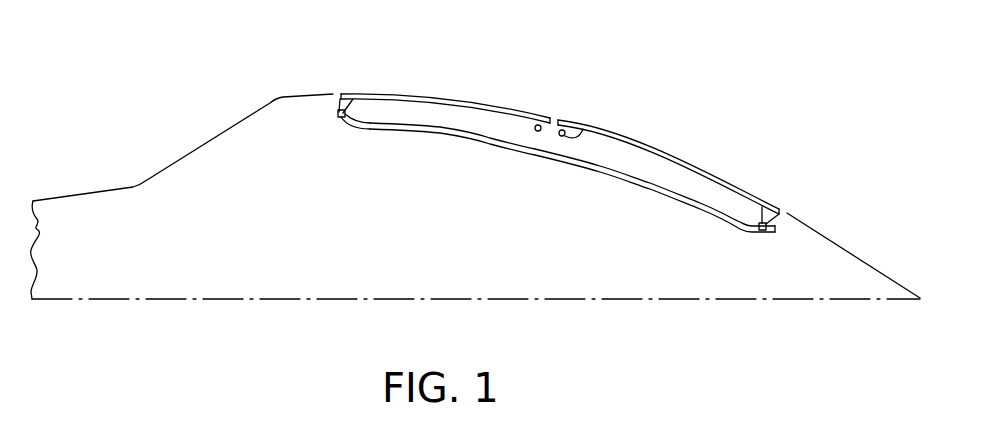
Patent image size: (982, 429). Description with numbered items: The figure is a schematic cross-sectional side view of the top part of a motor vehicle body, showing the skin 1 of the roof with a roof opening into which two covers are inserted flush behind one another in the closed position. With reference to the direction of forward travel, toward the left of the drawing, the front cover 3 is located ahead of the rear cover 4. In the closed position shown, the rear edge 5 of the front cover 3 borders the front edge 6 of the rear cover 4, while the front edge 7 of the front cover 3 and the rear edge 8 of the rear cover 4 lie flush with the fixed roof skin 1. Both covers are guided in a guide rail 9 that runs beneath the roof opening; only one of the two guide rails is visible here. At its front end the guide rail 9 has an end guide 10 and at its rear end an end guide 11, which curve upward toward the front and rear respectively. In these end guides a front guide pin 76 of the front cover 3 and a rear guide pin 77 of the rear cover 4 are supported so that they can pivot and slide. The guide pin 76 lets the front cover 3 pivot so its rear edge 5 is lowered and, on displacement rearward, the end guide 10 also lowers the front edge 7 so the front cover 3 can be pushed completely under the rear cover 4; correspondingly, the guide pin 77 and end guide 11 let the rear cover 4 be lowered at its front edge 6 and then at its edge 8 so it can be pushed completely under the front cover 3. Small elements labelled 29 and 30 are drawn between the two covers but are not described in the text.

The skin 1 is at (305, 96).
The front cover 3 is at (437, 96).
The rear cover 4 is at (669, 157).
The rear edge 5 is at (551, 117).
The front edge 6 is at (561, 118).
The front edge 7 is at (346, 94).
The rear edge 8 is at (779, 210).
The guide rail 9 is at (535, 154).
The end guide 10 is at (356, 128).
The end guide 11 is at (754, 233).
The pin 29 is at (536, 126).
The hook 30 is at (584, 129).
The front guide pin 76 is at (337, 118).
The rear guide pin 77 is at (763, 233).